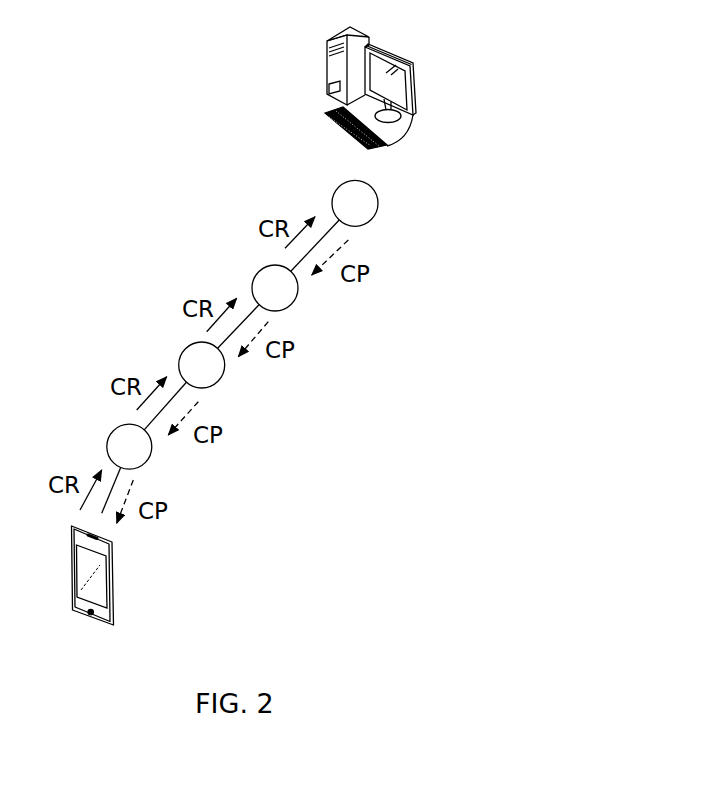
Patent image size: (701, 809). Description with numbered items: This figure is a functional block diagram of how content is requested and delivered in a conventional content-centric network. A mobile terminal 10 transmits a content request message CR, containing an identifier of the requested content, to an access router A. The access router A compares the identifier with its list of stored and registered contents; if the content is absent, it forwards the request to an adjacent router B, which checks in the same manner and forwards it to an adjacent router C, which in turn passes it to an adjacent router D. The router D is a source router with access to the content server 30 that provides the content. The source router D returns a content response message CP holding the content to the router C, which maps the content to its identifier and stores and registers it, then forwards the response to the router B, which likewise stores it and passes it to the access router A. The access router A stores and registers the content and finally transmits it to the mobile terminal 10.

The mobile terminal 10 is at (113, 592).
The content server 30 is at (326, 66).
The access router A is at (129, 446).
The adjacent router B is at (202, 365).
The adjacent router C is at (275, 288).
The source router D is at (355, 203).